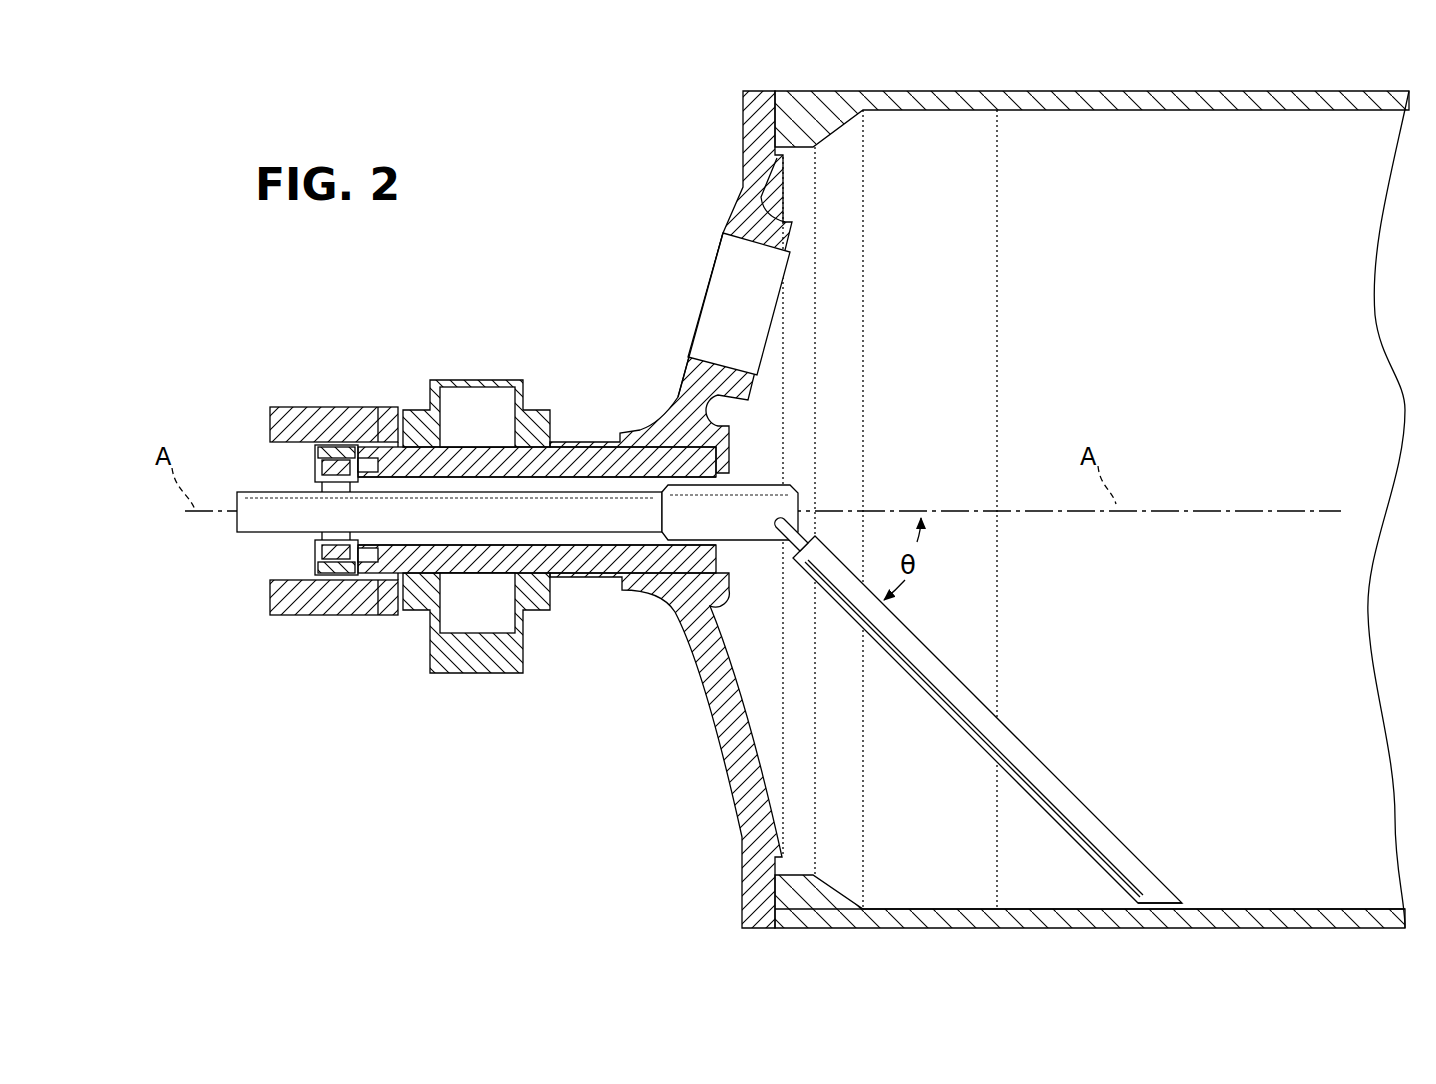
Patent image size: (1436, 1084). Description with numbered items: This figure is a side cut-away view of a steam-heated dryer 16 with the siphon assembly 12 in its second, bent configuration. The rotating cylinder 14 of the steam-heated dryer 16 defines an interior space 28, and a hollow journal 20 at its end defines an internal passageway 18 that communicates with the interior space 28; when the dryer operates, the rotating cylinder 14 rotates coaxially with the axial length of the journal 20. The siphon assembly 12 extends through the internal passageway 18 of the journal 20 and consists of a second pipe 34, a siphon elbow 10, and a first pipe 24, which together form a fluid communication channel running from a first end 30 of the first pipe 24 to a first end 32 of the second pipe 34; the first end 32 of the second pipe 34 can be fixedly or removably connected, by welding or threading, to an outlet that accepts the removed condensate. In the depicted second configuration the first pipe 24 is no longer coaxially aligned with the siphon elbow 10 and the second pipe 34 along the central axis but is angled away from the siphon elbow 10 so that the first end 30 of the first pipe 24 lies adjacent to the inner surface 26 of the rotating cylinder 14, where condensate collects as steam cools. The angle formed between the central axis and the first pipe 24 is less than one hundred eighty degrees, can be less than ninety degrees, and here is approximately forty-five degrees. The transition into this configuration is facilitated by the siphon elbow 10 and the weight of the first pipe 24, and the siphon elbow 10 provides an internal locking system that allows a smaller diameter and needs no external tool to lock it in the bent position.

The siphon elbow 10 is at (752, 482).
The siphon assembly 12 is at (579, 527).
The rotating cylinder 14 is at (737, 200).
The steam-heated dryer 16 is at (671, 509).
The internal passageway 18 is at (315, 488).
The journal 20 is at (648, 577).
The first pipe 24 is at (1016, 710).
The inner surface 26 is at (1068, 905).
The interior space 28 is at (1158, 140).
The first end 30 is at (1183, 897).
The first end 32 is at (237, 500).
The second pipe 34 is at (567, 500).